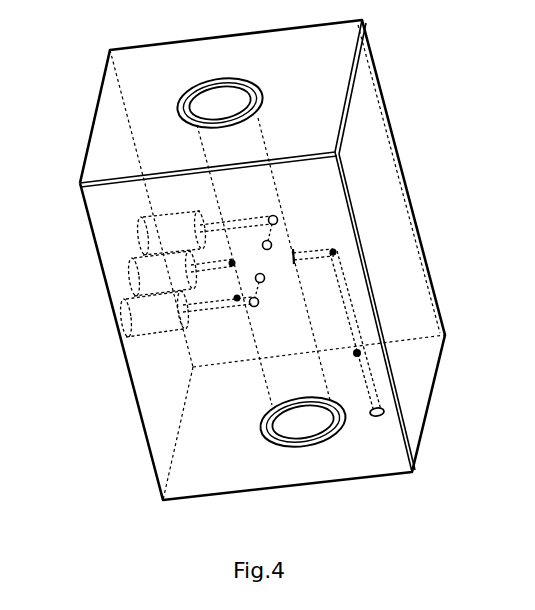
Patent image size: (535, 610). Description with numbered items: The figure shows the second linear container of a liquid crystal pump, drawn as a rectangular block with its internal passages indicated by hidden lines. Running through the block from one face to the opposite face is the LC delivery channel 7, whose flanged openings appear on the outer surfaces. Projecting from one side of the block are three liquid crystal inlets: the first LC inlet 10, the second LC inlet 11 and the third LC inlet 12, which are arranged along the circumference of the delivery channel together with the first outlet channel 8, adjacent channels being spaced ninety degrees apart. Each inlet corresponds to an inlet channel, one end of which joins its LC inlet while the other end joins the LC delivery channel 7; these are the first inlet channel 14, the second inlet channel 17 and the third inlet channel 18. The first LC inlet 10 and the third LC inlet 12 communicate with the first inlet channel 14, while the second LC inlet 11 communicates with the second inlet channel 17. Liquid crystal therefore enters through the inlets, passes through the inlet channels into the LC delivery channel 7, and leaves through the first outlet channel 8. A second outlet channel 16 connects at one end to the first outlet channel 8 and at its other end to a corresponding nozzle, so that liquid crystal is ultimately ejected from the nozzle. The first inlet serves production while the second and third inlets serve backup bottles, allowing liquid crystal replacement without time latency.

The LC delivery channel 7 is at (245, 132).
The first outlet channel 8 is at (295, 256).
The first LC inlet 10 is at (170, 227).
The second LC inlet 11 is at (163, 273).
The third LC inlet 12 is at (157, 323).
The first inlet channel 14 is at (270, 241).
The second outlet channel 16 is at (345, 288).
The second inlet channel 17 is at (218, 268).
The third inlet channel 18 is at (228, 300).